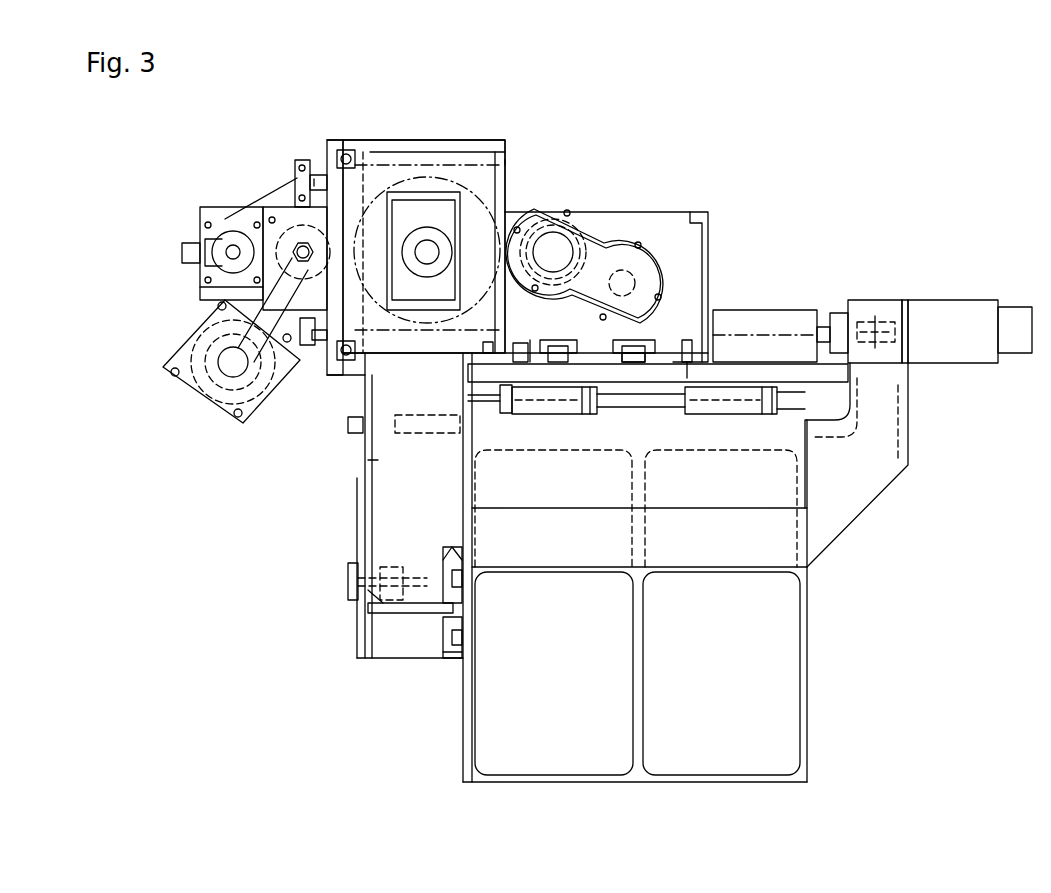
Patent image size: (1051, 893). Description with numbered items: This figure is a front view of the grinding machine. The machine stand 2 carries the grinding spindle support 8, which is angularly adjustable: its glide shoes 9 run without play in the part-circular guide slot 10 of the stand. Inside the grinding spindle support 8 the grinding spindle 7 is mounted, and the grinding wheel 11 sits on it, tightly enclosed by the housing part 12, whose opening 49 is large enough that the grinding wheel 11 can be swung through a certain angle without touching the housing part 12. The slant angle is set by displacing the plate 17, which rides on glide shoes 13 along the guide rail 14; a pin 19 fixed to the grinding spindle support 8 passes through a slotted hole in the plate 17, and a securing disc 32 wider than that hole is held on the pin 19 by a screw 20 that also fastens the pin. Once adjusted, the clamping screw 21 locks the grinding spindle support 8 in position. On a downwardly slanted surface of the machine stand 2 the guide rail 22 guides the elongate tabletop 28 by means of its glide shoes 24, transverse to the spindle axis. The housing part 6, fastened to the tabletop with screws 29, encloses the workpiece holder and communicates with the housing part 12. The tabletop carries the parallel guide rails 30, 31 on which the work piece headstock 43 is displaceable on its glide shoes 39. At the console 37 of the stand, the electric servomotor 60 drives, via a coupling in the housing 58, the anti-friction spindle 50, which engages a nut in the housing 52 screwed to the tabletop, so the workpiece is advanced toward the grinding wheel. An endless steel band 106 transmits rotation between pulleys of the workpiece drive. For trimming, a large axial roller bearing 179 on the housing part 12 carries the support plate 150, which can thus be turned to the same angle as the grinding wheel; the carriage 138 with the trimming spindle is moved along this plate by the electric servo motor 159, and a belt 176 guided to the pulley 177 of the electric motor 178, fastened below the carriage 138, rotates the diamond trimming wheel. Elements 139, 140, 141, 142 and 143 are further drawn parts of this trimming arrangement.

The machine stand 2 is at (807, 670).
The housing part 6 is at (362, 358).
The grinding spindle 7 is at (430, 245).
The grinding spindle support 8 is at (365, 460).
The glide shoes 9 is at (453, 555).
The guide slot 10 is at (465, 577).
The grinding wheel 11 is at (470, 165).
The housing part 12 is at (493, 140).
The glide shoes 13 is at (457, 662).
The guide rail 14 is at (465, 635).
The plate 17 is at (360, 660).
The pin 19 is at (383, 568).
The screw 20 is at (348, 585).
The clamping screw 21 is at (350, 430).
The guide rail 22 is at (670, 403).
The glide shoes 24 is at (560, 410).
The elongate tabletop 28 is at (750, 373).
The screws 29 is at (690, 343).
The guide rail 30 is at (550, 360).
The guide rail 31 is at (625, 365).
The securing disc 32 is at (350, 602).
The console 37 is at (910, 447).
The glide shoes 39 is at (635, 362).
The work piece headstock 43 is at (650, 323).
The opening 49 is at (408, 200).
The anti-friction spindle 50 is at (508, 208).
The housing 52 is at (767, 313).
The housing 58 is at (878, 320).
The electric servomotor 60 is at (970, 312).
The endless steel band 106 is at (598, 245).
The carriage 138 is at (290, 372).
The bracket 139 is at (300, 160).
The bracket 140 is at (302, 347).
The bolt 141 is at (327, 182).
The bolt 142 is at (323, 385).
The bearing 143 is at (346, 152).
The support plate 150 is at (300, 205).
The electric servo motor 159 is at (215, 250).
The belt 176 is at (212, 332).
The pulley 177 is at (215, 395).
The electric motor 178 is at (175, 375).
The axial roller bearing 179 is at (352, 165).